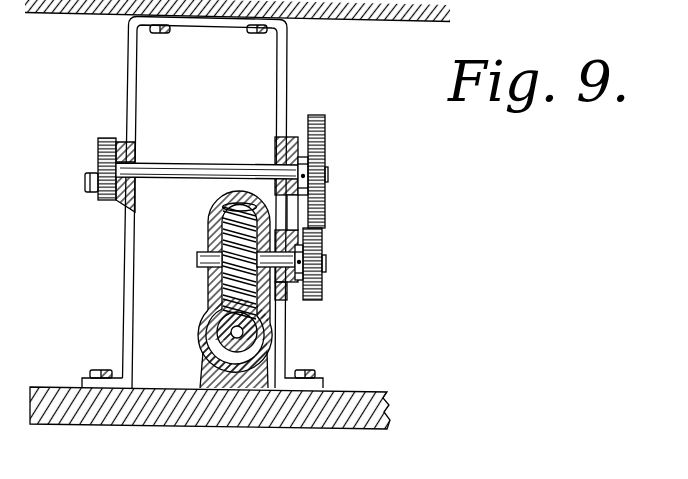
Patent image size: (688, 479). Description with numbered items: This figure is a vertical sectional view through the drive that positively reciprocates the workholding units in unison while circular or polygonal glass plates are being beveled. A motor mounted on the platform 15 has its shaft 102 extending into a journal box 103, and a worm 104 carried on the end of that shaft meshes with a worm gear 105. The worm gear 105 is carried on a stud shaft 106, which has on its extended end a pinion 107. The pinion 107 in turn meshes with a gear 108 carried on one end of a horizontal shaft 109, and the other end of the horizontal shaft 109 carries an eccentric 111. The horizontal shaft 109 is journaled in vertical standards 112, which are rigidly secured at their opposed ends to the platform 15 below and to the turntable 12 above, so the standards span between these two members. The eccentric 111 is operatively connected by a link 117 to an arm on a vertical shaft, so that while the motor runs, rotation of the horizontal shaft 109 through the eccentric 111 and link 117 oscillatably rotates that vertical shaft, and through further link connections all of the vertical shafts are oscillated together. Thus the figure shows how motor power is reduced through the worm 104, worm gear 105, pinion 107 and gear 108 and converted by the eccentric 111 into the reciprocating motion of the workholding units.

The turntable 12 is at (378, 22).
The platform 15 is at (360, 390).
The shaft 102 is at (247, 358).
The journal box 103 is at (215, 368).
The worm 104 is at (218, 333).
The worm gear 105 is at (227, 232).
The stud shaft 106 is at (200, 257).
The pinion 107 is at (326, 289).
The gear 108 is at (322, 147).
The horizontal shaft 109 is at (227, 145).
The eccentric 111 is at (108, 137).
The vertical standards 112 is at (132, 86).
The link 117 is at (88, 188).